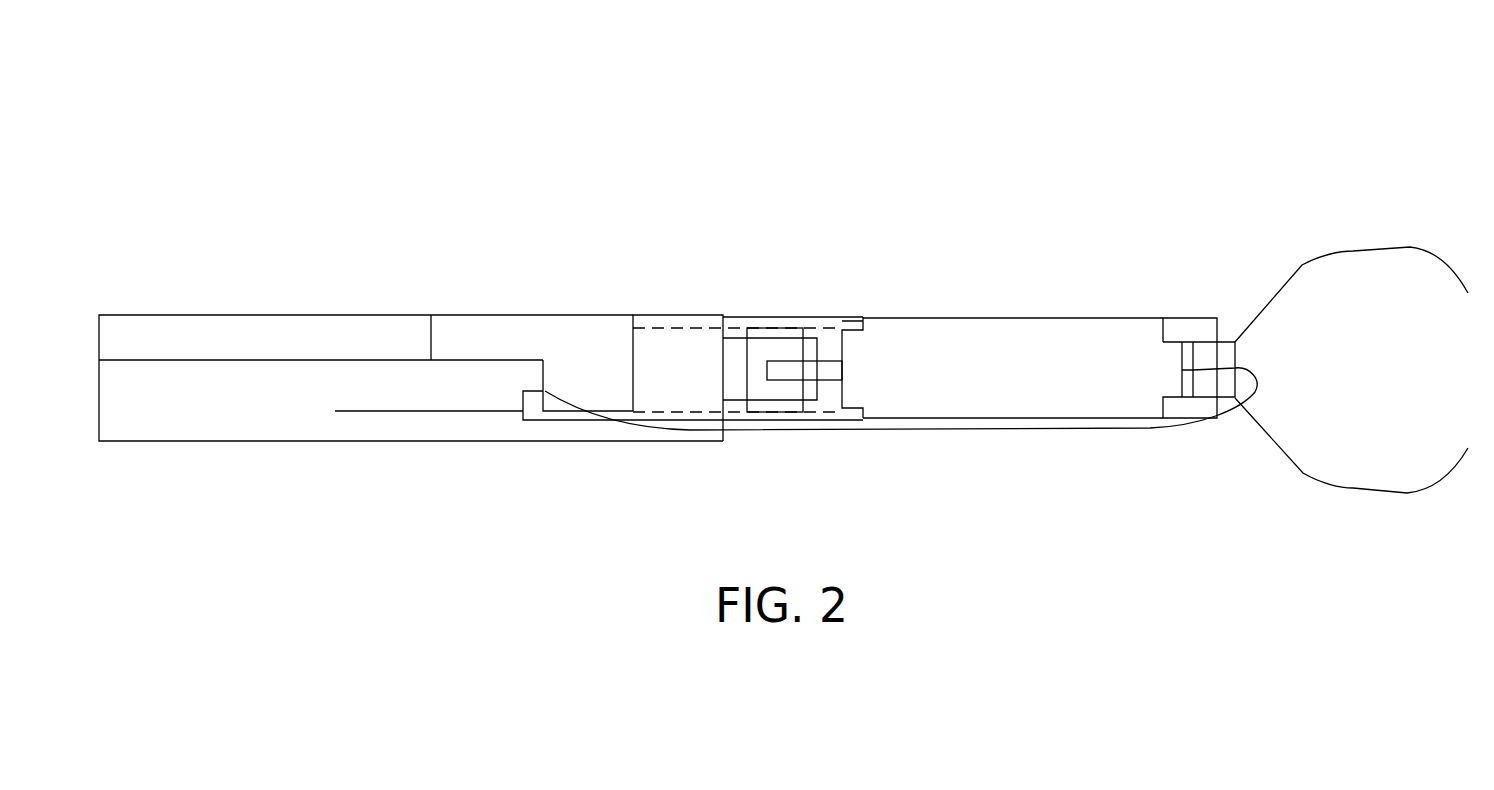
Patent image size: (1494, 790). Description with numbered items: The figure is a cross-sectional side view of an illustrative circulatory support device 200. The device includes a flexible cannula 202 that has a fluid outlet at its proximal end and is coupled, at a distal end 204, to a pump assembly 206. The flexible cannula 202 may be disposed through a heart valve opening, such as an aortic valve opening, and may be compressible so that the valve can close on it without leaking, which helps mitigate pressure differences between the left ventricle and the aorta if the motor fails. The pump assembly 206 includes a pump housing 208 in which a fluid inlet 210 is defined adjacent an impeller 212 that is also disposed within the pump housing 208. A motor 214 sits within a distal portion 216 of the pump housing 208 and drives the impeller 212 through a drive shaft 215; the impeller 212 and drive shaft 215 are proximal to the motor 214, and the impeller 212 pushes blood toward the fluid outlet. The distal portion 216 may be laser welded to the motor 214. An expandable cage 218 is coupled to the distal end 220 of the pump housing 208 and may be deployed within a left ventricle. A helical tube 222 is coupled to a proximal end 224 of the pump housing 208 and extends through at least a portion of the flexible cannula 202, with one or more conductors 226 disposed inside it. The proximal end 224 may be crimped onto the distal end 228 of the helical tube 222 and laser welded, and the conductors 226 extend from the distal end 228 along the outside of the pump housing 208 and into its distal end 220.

The circulatory support device 200 is at (180, 92).
The flexible cannula 202 is at (270, 330).
The distal end 204 is at (412, 306).
The pump assembly 206 is at (620, 305).
The pump housing 208 is at (848, 422).
The fluid inlet 210 is at (802, 348).
The impeller 212 is at (770, 340).
The motor 214 is at (1032, 383).
The drive shaft 215 is at (823, 372).
The distal portion 216 is at (995, 308).
The expandable cage 218 is at (1358, 248).
The distal end 220 is at (1188, 318).
The helical tube 222 is at (392, 393).
The proximal end 224 is at (522, 403).
The conductors 226 is at (1113, 430).
The distal end 228 is at (547, 372).